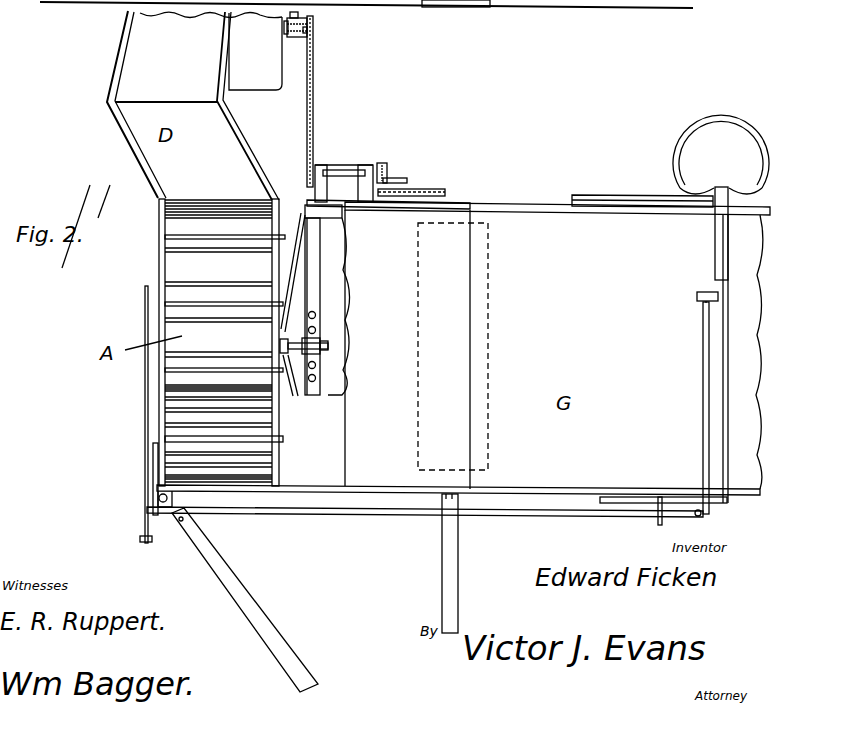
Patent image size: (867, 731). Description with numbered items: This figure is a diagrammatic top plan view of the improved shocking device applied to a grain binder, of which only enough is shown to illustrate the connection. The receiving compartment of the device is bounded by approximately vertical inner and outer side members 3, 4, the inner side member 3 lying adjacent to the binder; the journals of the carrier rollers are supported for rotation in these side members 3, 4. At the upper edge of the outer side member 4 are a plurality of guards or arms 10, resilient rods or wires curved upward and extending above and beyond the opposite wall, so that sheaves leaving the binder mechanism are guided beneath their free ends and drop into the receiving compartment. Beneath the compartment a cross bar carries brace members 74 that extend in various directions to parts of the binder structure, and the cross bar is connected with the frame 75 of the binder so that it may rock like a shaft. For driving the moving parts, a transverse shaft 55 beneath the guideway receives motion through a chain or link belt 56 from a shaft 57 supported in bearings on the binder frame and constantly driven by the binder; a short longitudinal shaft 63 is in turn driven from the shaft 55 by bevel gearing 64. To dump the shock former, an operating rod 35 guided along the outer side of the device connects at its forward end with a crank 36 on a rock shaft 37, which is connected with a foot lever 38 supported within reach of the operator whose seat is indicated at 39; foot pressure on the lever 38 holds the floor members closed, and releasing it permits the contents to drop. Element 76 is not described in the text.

The inner side member 3 is at (272, 268).
The outer side member 4 is at (158, 268).
The guards or arms 10 is at (222, 236).
The operating rod 35 is at (145, 437).
The crank 36 is at (142, 524).
The rock shaft 37 is at (359, 517).
The foot lever 38 is at (703, 309).
The operator's seat 39 is at (700, 187).
The shaft 55 is at (300, 38).
The chain or link belt 56 is at (314, 112).
The shaft 57 is at (345, 170).
The short longitudinal shaft 63 is at (300, 13).
The bevel gearing 64 is at (285, 36).
The brace members 74 is at (290, 306).
The frame of the binder 75 is at (313, 240).
The bolt 76 is at (312, 346).